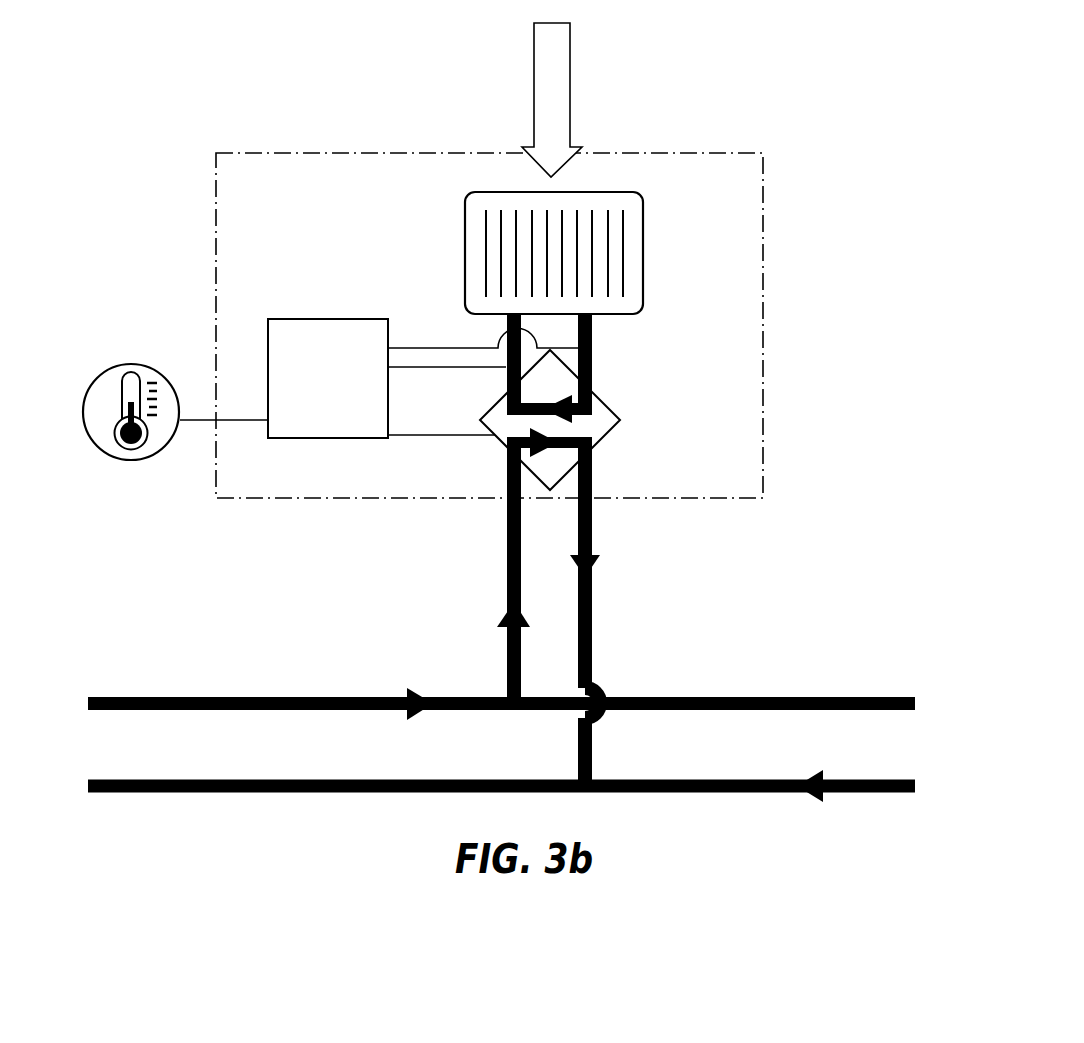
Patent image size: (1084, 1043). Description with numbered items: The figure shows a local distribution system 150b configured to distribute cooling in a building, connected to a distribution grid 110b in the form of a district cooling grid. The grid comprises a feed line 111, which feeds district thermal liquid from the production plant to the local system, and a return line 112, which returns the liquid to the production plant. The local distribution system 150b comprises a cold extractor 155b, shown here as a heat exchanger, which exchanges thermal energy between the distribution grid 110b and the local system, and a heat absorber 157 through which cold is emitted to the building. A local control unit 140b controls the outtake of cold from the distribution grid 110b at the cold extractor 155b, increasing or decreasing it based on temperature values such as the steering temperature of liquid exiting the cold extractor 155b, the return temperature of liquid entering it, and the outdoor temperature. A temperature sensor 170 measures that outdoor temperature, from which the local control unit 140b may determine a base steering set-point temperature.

The distribution grid 110b is at (501, 768).
The feed line 111 is at (375, 697).
The return line 112 is at (501, 772).
The local control unit 140b is at (307, 423).
The local distribution system 150b is at (743, 492).
The cold extractor 155b is at (622, 418).
The heat absorber 157 is at (636, 232).
The temperature sensor 170 is at (152, 443).